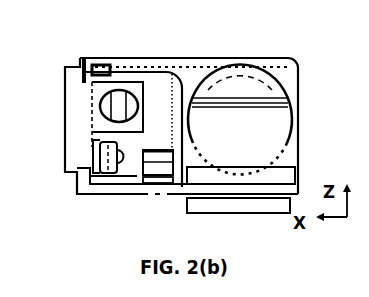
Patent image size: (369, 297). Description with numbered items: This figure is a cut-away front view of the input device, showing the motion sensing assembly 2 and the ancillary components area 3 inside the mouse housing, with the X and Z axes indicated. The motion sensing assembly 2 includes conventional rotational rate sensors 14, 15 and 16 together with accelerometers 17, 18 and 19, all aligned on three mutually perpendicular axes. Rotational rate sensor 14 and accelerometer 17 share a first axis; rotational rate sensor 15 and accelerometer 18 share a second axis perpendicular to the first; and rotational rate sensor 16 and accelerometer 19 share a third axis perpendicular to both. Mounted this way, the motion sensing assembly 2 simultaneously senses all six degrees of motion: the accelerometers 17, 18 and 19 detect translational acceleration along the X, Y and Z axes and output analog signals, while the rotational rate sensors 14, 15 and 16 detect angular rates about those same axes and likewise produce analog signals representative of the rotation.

The motion sensing assembly 2 is at (243, 58).
The ancillary components area 3 is at (190, 68).
The rotational rate sensor 14 is at (124, 72).
The rotational rate sensor 15 is at (286, 78).
The rotational rate sensor 16 is at (296, 163).
The accelerometer 17 is at (123, 150).
The accelerometer 18 is at (138, 103).
The accelerometer 19 is at (165, 150).